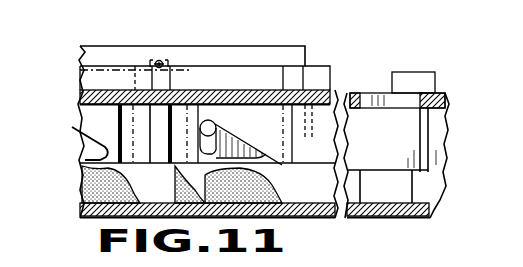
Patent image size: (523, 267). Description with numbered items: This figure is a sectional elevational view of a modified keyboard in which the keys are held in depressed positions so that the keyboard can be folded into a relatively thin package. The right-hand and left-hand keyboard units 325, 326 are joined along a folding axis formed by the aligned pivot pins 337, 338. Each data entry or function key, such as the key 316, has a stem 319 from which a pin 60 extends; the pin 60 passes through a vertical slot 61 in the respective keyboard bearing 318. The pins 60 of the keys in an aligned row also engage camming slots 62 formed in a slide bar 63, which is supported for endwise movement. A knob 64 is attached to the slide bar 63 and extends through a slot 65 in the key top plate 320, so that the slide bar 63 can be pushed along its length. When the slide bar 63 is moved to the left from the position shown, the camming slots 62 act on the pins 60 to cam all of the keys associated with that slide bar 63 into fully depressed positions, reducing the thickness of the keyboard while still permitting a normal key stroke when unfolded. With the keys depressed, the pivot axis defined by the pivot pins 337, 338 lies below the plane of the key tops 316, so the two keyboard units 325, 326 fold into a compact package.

The key 316 is at (256, 50).
The stem 319 is at (300, 82).
The pivot pin 337 is at (158, 60).
The pivot pin 338 is at (202, 40).
The key top plate 320 is at (338, 91).
The slot 65 is at (382, 109).
The knob 64 is at (408, 80).
The slide bar 63 is at (440, 174).
The pin 60 is at (218, 126).
The vertical slot 61 is at (196, 176).
The camming slot 62 is at (283, 170).
The keyboard bearing 318 is at (300, 146).
The left-hand keyboard unit 326 is at (86, 211).
The right-hand keyboard unit 325 is at (410, 225).